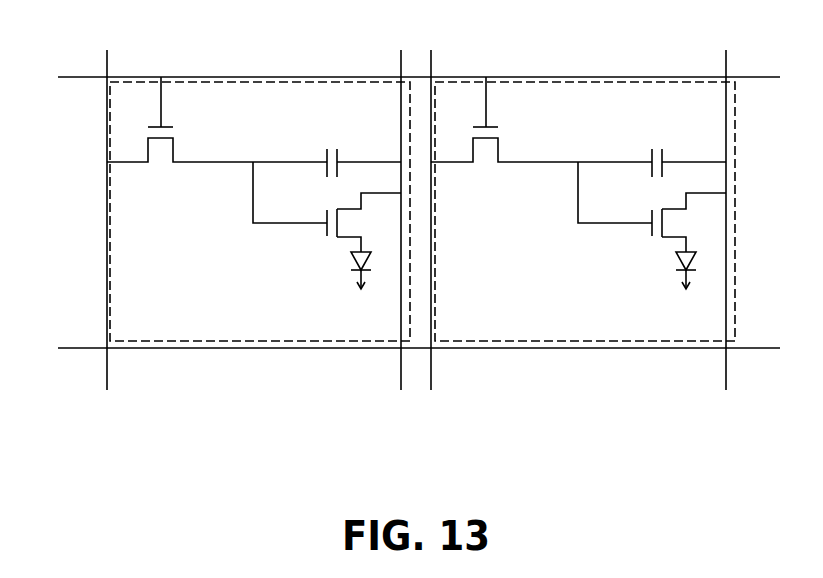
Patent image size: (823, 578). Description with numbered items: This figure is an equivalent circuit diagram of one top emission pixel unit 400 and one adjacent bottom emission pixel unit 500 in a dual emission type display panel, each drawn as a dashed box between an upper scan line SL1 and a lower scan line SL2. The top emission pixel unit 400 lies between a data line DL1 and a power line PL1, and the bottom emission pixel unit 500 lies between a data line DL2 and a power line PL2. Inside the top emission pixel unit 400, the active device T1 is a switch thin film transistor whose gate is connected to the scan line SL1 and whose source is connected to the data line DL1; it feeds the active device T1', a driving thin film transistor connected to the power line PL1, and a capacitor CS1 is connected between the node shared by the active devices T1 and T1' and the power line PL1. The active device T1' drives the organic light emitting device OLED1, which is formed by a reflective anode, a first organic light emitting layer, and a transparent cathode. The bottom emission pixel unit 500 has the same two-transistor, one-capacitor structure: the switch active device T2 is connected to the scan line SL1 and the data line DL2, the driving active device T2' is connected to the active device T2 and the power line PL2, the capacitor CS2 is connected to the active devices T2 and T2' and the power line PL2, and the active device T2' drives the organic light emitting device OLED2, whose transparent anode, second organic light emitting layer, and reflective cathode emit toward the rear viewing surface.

The top emission pixel unit 400 is at (110, 203).
The bottom emission pixel unit 500 is at (736, 202).
The scan line SL1 is at (401, 76).
The scan line SL2 is at (396, 354).
The data line DL1 is at (112, 206).
The data line DL2 is at (437, 206).
The power line PL1 is at (398, 206).
The power line PL2 is at (730, 206).
The active device T1 is at (217, 102).
The active device T2 is at (541, 104).
The active device T1' is at (327, 216).
The active device T2' is at (652, 218).
The capacitor CS1 is at (327, 152).
The capacitor CS2 is at (652, 152).
The organic light emitting device OLED1 is at (352, 265).
The organic light emitting device OLED2 is at (677, 265).